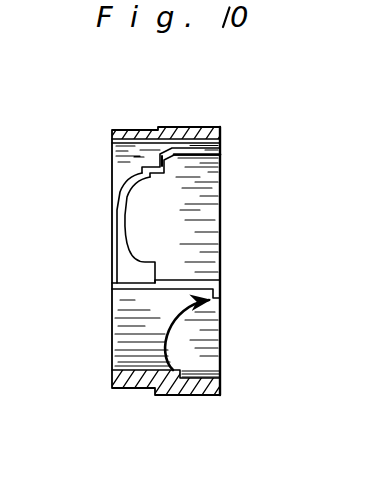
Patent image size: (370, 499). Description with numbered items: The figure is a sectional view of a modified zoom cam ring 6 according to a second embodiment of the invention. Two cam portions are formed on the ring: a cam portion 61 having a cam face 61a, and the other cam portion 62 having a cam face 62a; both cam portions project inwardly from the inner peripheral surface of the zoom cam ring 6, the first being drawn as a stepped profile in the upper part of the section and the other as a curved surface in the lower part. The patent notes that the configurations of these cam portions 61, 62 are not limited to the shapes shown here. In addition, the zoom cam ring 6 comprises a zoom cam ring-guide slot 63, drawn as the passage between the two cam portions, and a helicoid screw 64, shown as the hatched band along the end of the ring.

The zoom cam ring 6 is at (224, 168).
The helicoid screw 64 is at (193, 128).
The cam face 61a is at (128, 180).
The cam portion 61 is at (145, 206).
The zoom cam ring-guide slot 63 is at (134, 290).
The cam face 62a is at (211, 304).
The cam portion 62 is at (171, 314).